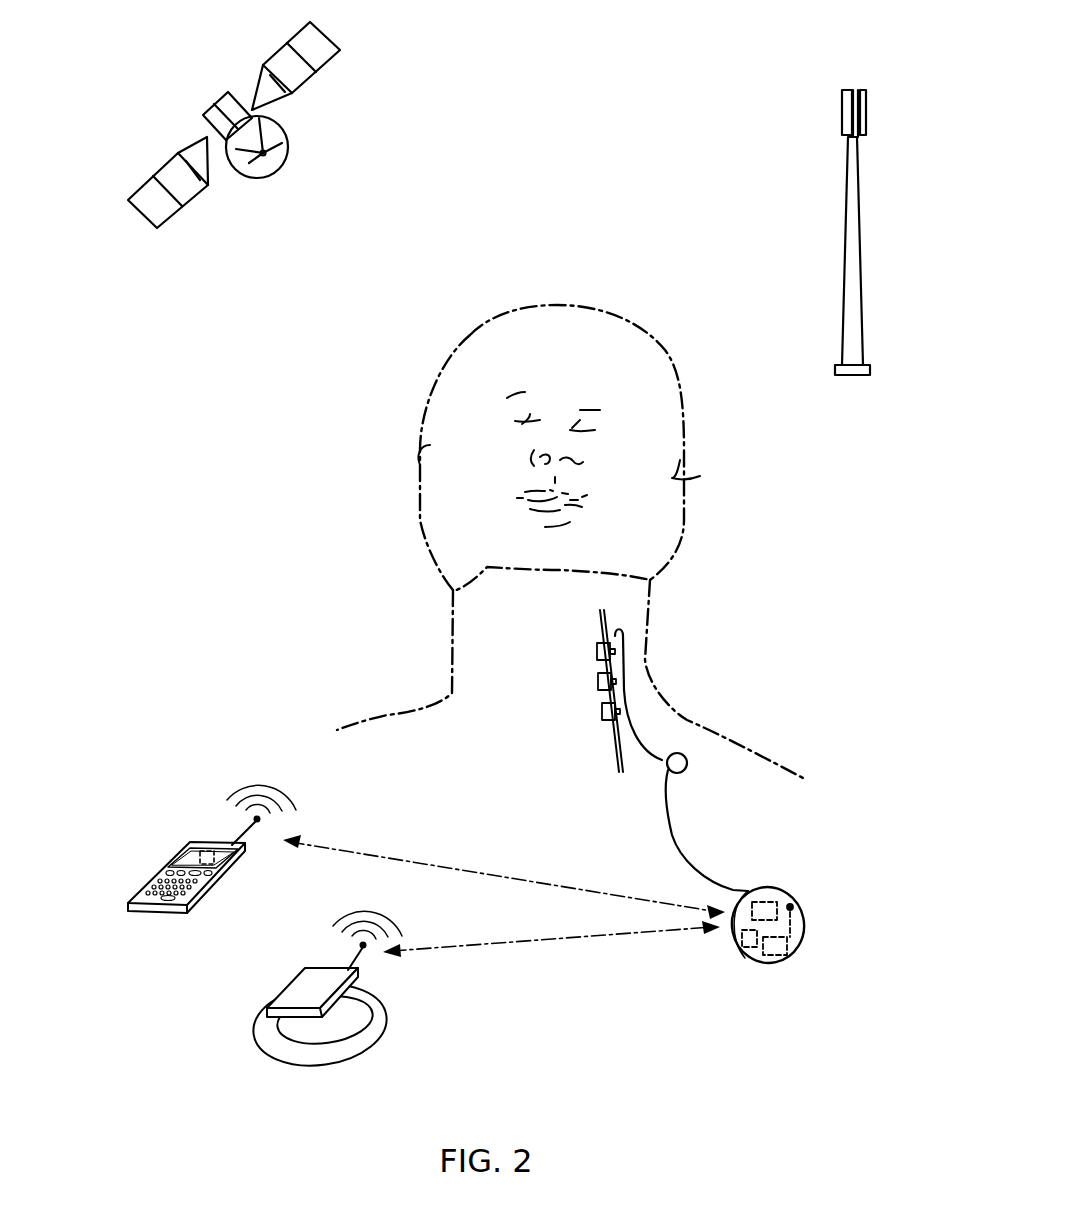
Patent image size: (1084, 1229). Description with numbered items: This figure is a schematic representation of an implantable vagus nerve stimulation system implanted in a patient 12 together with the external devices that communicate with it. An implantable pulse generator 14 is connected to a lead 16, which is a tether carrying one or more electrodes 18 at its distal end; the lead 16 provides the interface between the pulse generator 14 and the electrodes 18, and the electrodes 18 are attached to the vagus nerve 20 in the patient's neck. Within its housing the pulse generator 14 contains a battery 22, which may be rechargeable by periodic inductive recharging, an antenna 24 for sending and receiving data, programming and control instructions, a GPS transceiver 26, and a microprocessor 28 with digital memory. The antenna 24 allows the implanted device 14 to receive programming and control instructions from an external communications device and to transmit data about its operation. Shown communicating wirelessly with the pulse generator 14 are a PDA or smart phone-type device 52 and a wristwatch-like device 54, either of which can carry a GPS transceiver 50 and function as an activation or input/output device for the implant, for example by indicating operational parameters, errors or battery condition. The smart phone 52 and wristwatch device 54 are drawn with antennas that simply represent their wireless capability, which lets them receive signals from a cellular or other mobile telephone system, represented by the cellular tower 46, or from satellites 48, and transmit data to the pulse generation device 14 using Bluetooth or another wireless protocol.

The patient 12 is at (690, 330).
The implantable pulse generator 14 is at (800, 947).
The lead 16 is at (677, 835).
The electrodes 18 is at (597, 650).
The vagus nerve 20 is at (615, 762).
The battery 22 is at (738, 940).
The antenna 24 is at (803, 920).
The GPS transceiver 26 is at (767, 953).
The microprocessor 28 is at (770, 900).
The cellular tower 46 is at (852, 152).
The satellites 48 is at (223, 98).
The GPS transceiver 50 is at (210, 848).
The smart phone-type device 52 is at (207, 890).
The wristwatch-like device 54 is at (298, 997).